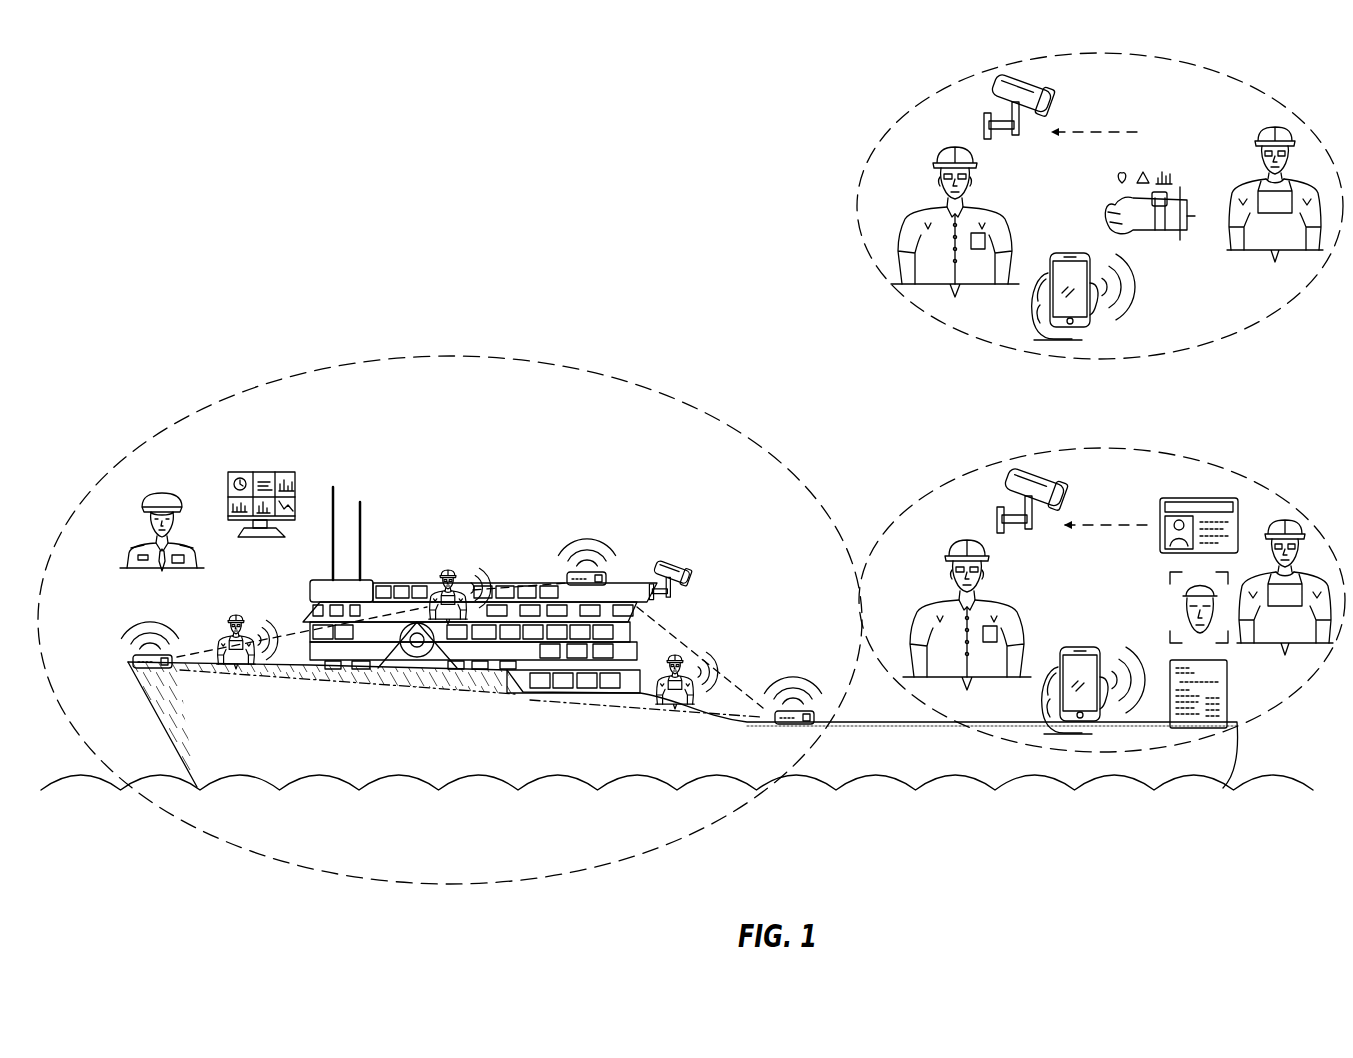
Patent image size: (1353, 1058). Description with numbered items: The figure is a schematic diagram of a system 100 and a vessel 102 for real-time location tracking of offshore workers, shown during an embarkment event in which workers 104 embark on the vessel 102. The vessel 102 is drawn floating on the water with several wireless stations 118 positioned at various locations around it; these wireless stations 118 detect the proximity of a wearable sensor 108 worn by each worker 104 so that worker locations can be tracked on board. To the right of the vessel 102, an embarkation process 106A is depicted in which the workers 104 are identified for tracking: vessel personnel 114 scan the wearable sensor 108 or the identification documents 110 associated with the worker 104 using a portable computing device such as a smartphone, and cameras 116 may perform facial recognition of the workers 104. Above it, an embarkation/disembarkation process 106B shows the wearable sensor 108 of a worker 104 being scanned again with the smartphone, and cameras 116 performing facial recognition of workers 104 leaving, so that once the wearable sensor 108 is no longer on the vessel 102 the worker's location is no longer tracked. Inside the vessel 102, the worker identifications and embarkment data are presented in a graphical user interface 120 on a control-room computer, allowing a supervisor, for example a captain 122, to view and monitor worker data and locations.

The system 100 is at (205, 140).
The vessel 102 is at (513, 777).
The workers 104 is at (237, 663).
The embarkation process 106A is at (952, 458).
The embarkation/disembarkation process 106B is at (952, 68).
The wearable sensor 108 is at (1160, 157).
The identification documents 110 is at (1073, 647).
The vessel personnel 114 is at (967, 542).
The cameras 116 is at (1027, 477).
The wireless stations 118 is at (145, 677).
The graphical user interface 120 is at (267, 472).
The captain 122 is at (132, 560).